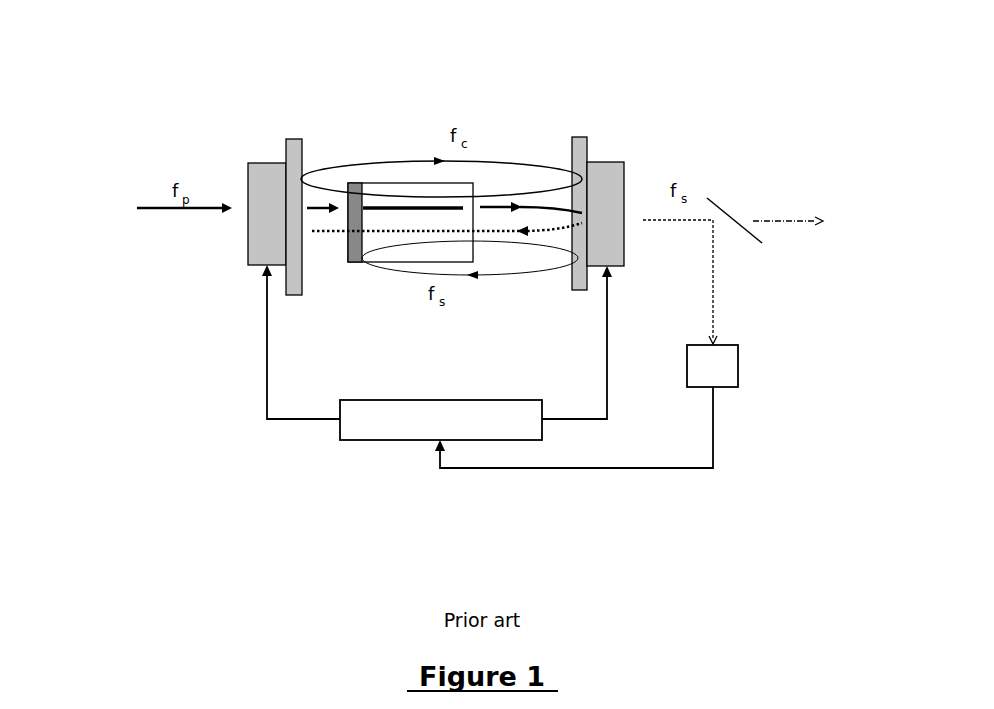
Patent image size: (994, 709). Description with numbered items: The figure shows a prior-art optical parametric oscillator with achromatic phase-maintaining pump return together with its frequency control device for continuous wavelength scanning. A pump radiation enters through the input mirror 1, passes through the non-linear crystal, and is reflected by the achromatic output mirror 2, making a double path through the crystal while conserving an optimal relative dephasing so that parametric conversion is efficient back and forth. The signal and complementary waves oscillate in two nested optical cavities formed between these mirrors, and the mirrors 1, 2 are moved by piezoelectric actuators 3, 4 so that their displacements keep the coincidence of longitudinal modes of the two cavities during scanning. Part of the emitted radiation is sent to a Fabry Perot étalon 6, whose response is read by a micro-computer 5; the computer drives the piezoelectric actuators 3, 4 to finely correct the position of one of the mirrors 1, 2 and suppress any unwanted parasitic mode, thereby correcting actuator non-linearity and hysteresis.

The input mirror 1 is at (293, 139).
The output mirror 2 is at (577, 137).
The piezoelectric actuator 3 is at (255, 163).
The piezoelectric actuator 4 is at (612, 162).
The micro-computer 5 is at (363, 440).
The Fabry Perot étalon 6 is at (738, 365).